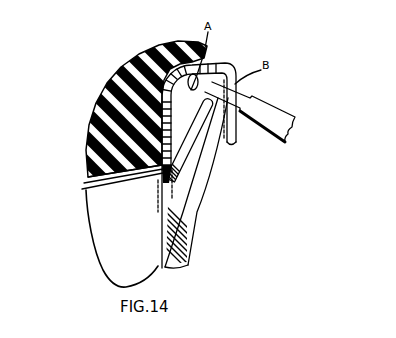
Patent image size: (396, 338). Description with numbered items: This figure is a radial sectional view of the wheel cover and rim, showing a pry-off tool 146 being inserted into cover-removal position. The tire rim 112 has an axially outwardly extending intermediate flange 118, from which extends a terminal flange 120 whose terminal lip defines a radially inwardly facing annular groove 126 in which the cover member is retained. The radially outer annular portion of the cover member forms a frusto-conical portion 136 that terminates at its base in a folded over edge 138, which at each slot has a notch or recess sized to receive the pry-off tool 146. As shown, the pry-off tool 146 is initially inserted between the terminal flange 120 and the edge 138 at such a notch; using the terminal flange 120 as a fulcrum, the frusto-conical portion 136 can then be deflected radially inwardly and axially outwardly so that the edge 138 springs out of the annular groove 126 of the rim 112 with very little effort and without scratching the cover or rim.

The tire rim 112 is at (84, 187).
The intermediate flange 118 is at (113, 192).
The terminal flange 120 is at (215, 72).
The annular groove 126 is at (200, 89).
The frusto-conical portion 136 is at (186, 182).
The folded over edge 138 is at (195, 78).
The pry-off tool 146 is at (284, 119).